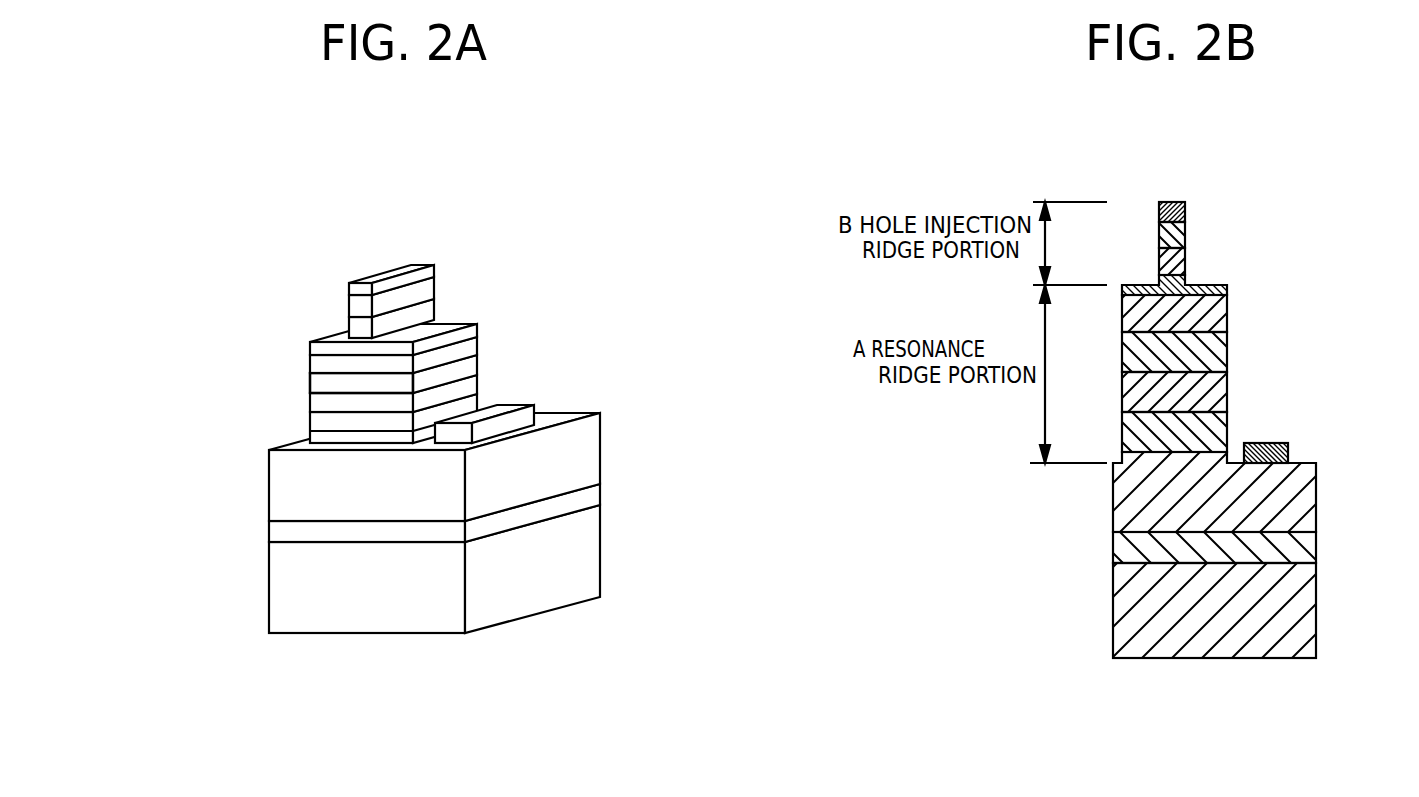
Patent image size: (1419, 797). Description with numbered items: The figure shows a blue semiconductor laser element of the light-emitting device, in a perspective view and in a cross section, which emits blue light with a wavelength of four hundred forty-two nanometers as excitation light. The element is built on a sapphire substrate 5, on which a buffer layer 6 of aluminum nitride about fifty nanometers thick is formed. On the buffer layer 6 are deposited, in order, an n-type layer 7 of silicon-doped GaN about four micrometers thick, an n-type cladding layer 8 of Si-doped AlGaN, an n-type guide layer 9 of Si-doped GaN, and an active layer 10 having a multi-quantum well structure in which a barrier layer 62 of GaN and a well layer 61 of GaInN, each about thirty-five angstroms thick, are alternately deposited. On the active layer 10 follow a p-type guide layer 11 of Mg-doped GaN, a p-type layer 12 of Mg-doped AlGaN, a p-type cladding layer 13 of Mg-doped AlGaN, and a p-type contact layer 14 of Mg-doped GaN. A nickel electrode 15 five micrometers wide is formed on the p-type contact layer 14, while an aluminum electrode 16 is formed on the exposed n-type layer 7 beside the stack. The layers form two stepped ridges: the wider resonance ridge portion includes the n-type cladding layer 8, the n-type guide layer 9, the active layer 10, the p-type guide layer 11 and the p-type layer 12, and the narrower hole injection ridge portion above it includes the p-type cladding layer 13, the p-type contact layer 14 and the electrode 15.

In FIG. 2A, the sapphire substrate 5 is at (592, 562).
In FIG. 2B, the sapphire substrate 5 is at (1316, 632).
In FIG. 2A, the buffer layer 6 is at (590, 500).
In FIG. 2B, the buffer layer 6 is at (1316, 547).
In FIG. 2A, the n-type layer 7 is at (587, 462).
In FIG. 2B, the n-type layer 7 is at (1314, 503).
In FIG. 2A, the n-type cladding layer 8 is at (313, 424).
In FIG. 2B, the n-type cladding layer 8 is at (1225, 433).
In FIG. 2A, the n-type guide layer 9 is at (475, 388).
In FIG. 2B, the n-type guide layer 9 is at (1225, 390).
In FIG. 2A, the active layer 10 is at (313, 388).
In FIG. 2B, the active layer 10 is at (1225, 352).
In FIG. 2A, the well layer 61 is at (230, 353).
In FIG. 2A, the barrier layer 62 is at (230, 364).
In FIG. 2A, the p-type guide layer 11 is at (475, 347).
In FIG. 2B, the p-type guide layer 11 is at (1228, 313).
In FIG. 2A, the p-type layer 12 is at (328, 345).
In FIG. 2B, the p-type layer 12 is at (1228, 288).
In FIG. 2A, the p-type cladding layer 13 is at (434, 305).
In FIG. 2B, the p-type cladding layer 13 is at (1183, 265).
In FIG. 2A, the p-type contact layer 14 is at (359, 311).
In FIG. 2B, the p-type contact layer 14 is at (1184, 238).
In FIG. 2A, the electrode 15 is at (437, 272).
In FIG. 2B, the electrode 15 is at (1187, 210).
In FIG. 2A, the electrode 16 is at (535, 408).
In FIG. 2B, the electrode 16 is at (1289, 452).